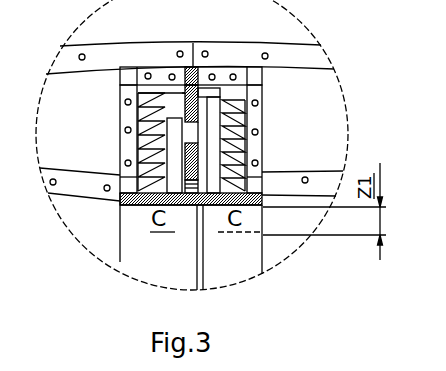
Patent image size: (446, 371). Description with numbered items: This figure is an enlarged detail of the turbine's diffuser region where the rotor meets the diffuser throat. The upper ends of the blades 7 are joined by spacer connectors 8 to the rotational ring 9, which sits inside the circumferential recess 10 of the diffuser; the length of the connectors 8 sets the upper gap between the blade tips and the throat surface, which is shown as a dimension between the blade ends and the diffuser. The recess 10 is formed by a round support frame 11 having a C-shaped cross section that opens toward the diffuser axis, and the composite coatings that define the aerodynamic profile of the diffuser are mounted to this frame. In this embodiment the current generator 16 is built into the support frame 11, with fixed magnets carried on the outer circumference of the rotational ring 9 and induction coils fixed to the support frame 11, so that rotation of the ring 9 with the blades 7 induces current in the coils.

The blades 7 is at (203, 265).
The spacer connectors 8 is at (230, 237).
The rotational ring 9 is at (135, 205).
The recess 10 is at (192, 132).
The support frame 11 is at (215, 160).
The current generator 16 is at (263, 152).